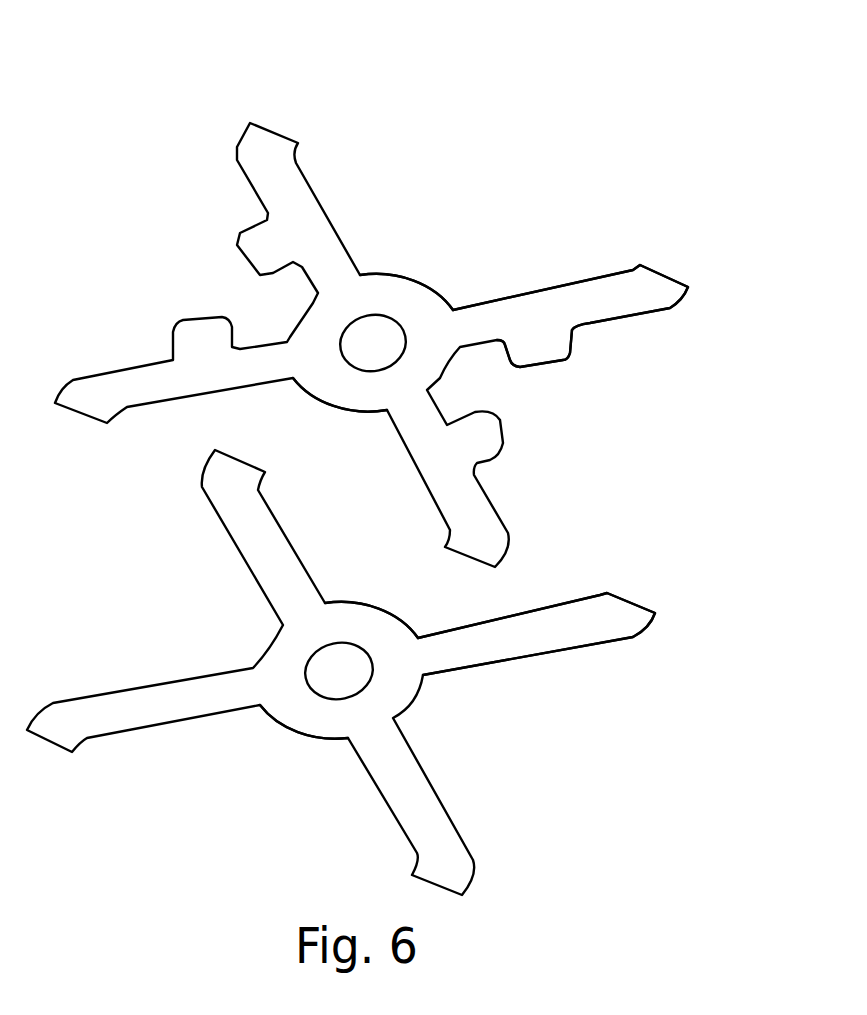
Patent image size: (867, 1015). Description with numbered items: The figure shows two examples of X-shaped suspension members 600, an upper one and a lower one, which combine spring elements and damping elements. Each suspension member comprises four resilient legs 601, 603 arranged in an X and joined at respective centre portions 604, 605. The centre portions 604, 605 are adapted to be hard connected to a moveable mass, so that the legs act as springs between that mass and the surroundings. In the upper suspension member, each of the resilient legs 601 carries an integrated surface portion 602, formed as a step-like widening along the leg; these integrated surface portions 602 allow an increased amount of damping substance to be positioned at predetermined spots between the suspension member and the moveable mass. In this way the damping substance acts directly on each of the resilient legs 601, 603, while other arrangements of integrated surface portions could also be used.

The X-shaped suspension member 600 is at (560, 87).
The resilient leg 601 is at (660, 283).
The integrated surface portion 602 is at (546, 352).
The resilient leg 603 is at (587, 635).
The centre portion 604 is at (392, 295).
The centre portion 605 is at (307, 717).